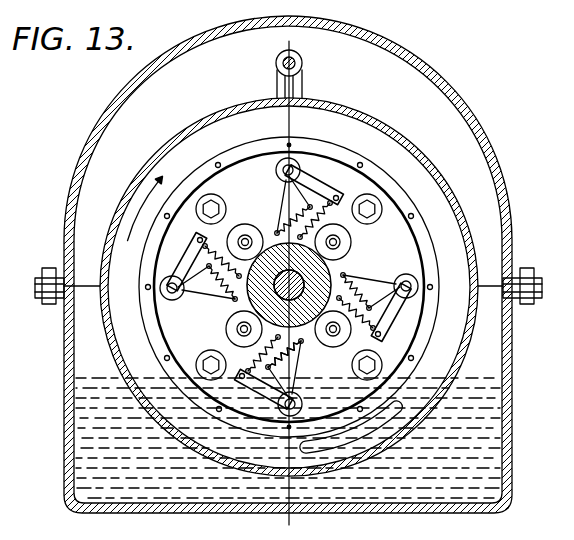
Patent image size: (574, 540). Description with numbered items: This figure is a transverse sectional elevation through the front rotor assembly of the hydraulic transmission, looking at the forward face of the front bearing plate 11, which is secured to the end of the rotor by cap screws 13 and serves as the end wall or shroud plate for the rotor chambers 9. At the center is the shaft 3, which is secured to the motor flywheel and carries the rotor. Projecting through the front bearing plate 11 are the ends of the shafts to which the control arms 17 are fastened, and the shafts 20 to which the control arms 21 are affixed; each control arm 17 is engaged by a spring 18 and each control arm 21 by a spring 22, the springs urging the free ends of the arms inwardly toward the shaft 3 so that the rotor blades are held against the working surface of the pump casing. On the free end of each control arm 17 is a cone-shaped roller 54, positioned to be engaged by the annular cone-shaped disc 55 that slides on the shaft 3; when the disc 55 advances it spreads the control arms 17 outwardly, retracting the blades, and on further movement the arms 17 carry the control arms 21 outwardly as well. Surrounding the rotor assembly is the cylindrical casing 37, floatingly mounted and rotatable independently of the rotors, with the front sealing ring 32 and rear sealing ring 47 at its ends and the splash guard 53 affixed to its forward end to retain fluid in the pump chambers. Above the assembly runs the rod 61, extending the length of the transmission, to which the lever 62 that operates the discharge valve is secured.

The shaft 3 is at (246, 309).
The rotor chambers 9 is at (258, 41).
The front bearing plate 11 is at (400, 246).
The cap screws 13 is at (222, 201).
The control arm 17 is at (194, 278).
The spring 18 is at (218, 283).
The shaft 20 is at (163, 288).
The control arm 21 is at (182, 264).
The spring 22 is at (203, 240).
The front sealing ring 32 is at (258, 148).
The cylindrical casing 37 is at (375, 131).
The rear sealing ring 47 is at (366, 443).
The splash guard 53 is at (430, 163).
The cone-shaped roller 54 is at (249, 226).
The annular cone-shaped disc 55 is at (307, 341).
The rod 61 is at (302, 63).
The lever 62 is at (305, 87).